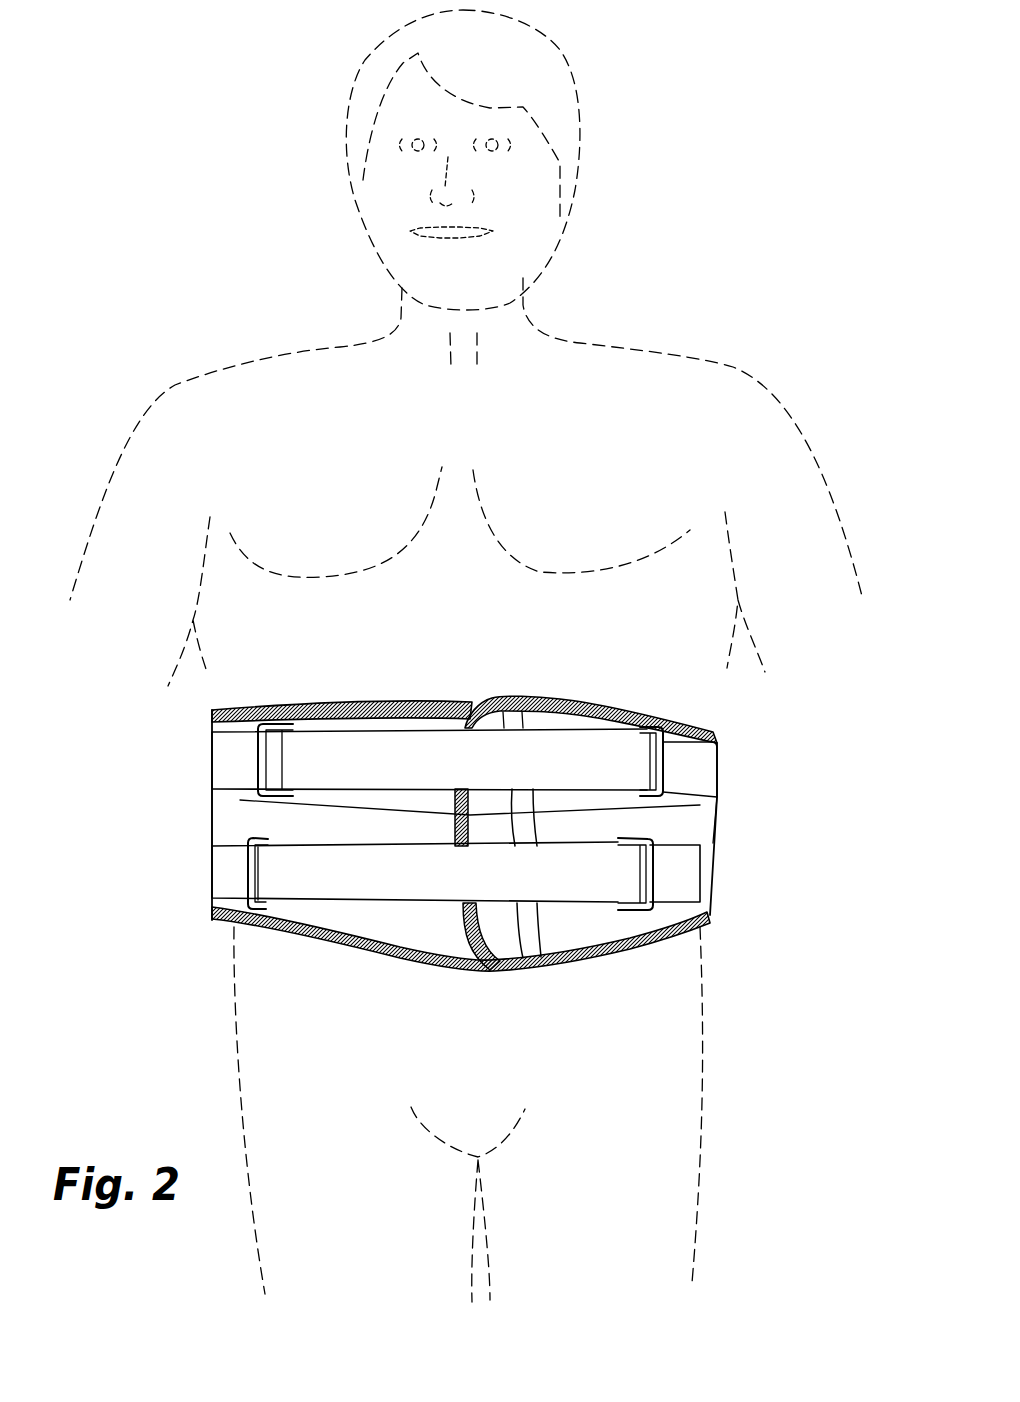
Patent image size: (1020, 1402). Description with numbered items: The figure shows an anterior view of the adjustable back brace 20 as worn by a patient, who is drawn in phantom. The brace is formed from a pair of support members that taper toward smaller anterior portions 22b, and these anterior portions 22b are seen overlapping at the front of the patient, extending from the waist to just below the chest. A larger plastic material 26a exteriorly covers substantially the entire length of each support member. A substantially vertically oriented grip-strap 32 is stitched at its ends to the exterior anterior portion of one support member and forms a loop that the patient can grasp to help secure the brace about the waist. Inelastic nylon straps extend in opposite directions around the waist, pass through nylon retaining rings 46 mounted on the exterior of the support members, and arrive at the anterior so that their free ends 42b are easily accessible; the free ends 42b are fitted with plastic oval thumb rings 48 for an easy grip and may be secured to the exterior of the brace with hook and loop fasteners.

The adjustable back brace 20 is at (758, 727).
The anterior portion 22b is at (345, 817).
The larger plastic material 26a is at (233, 901).
The grip-strap 32 is at (512, 847).
The free end of strap 42b is at (550, 753).
The nylon retaining ring 46 is at (665, 750).
The plastic oval thumb ring 48 is at (277, 714).